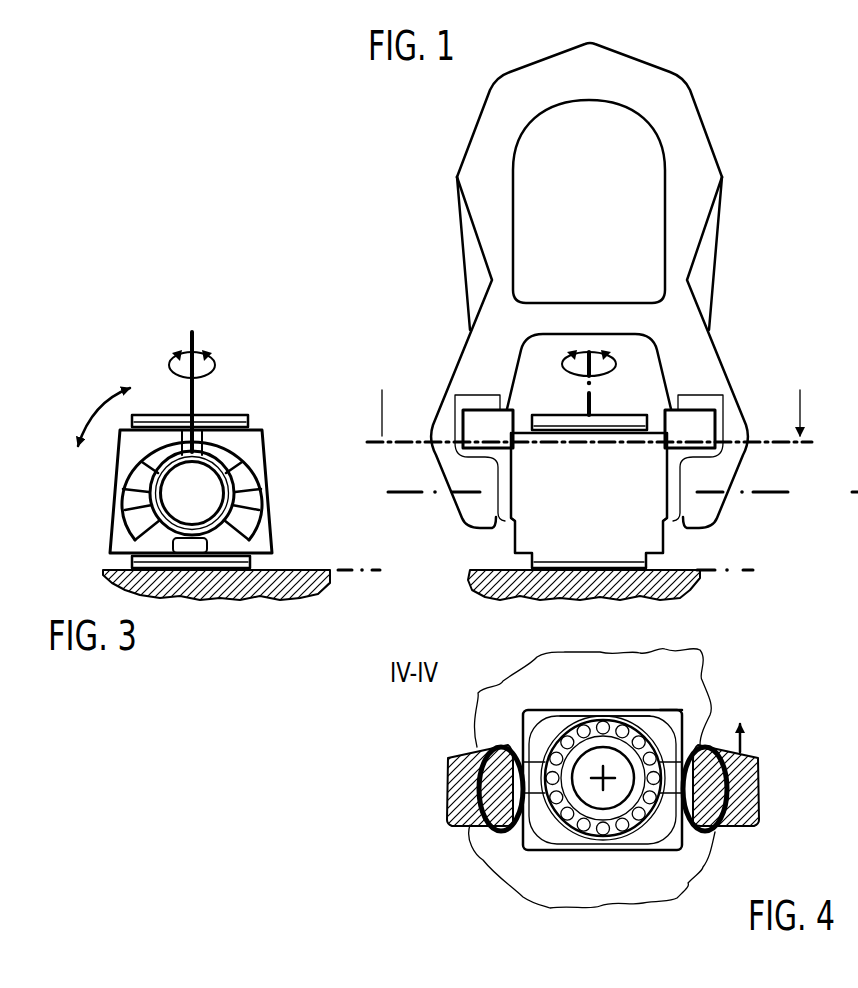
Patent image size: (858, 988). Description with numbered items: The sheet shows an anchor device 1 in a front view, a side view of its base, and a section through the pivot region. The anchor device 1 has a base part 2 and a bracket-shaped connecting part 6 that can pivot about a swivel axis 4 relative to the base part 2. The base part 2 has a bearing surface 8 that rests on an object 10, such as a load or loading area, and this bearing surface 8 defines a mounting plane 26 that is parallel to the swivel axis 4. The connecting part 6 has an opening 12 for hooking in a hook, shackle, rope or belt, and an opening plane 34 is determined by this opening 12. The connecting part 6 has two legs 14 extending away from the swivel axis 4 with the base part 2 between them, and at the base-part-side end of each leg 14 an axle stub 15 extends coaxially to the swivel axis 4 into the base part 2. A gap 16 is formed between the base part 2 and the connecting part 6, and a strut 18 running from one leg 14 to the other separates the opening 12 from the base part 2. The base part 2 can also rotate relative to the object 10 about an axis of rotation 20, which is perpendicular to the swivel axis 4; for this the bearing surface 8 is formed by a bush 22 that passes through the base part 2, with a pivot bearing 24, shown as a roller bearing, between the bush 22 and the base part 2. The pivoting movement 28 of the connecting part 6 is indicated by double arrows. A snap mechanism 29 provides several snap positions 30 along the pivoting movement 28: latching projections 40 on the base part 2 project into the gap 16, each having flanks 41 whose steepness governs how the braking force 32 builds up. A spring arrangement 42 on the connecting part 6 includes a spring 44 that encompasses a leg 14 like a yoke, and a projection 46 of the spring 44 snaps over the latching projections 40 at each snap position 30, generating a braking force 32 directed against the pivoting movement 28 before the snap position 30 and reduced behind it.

In FIG. 1, the anchor device 1 is at (426, 134).
In FIG. 3, the anchor device 1 is at (116, 338).
In FIG. 4, the anchor device 1 is at (785, 705).
In FIG. 1, the base part 2 is at (664, 540).
In FIG. 3, the base part 2 is at (262, 436).
In FIG. 4, the base part 2 is at (543, 847).
In FIG. 1, the swivel axis 4 is at (778, 497).
In FIG. 1, the connecting part 6 is at (695, 127).
In FIG. 4, the connecting part 6 is at (753, 795).
In FIG. 3, the bearing surface 8 is at (226, 575).
In FIG. 1, the object 10 is at (512, 582).
In FIG. 3, the object 10 is at (190, 585).
In FIG. 4, the object 10 is at (598, 881).
In FIG. 1, the opening 12 is at (589, 201).
In FIG. 1, the legs 14 is at (473, 355).
In FIG. 1, the axle stub 15 is at (507, 524).
In FIG. 1, the gap 16 is at (500, 456).
In FIG. 4, the gap 16 is at (513, 840).
In FIG. 1, the strut 18 is at (587, 313).
In FIG. 1, the axis of rotation 20 is at (592, 401).
In FIG. 3, the axis of rotation 20 is at (196, 343).
In FIG. 4, the axis of rotation 20 is at (570, 735).
In FIG. 1, the bush 22 is at (560, 420).
In FIG. 3, the bush 22 is at (190, 421).
In FIG. 4, the bush 22 is at (623, 712).
In FIG. 4, the pivot bearing 24 is at (665, 802).
In FIG. 1, the mounting plane 26 is at (745, 563).
In FIG. 3, the mounting plane 26 is at (336, 566).
In FIG. 3, the pivoting movement 28 is at (88, 425).
In FIG. 1, the snap mechanism 29 is at (518, 405).
In FIG. 3, the snap mechanism 29 is at (192, 364).
In FIG. 4, the snap mechanism 29 is at (511, 736).
In FIG. 3, the snap position 30 is at (198, 452).
In FIG. 4, the braking force 32 is at (745, 746).
In FIG. 1, the opening plane 34 is at (620, 208).
In FIG. 3, the latching projection 40 is at (210, 430).
In FIG. 3, the flanks 41 is at (184, 452).
In FIG. 1, the spring arrangement 42 is at (470, 422).
In FIG. 4, the spring 44 is at (477, 747).
In FIG. 4, the projection 46 is at (673, 712).